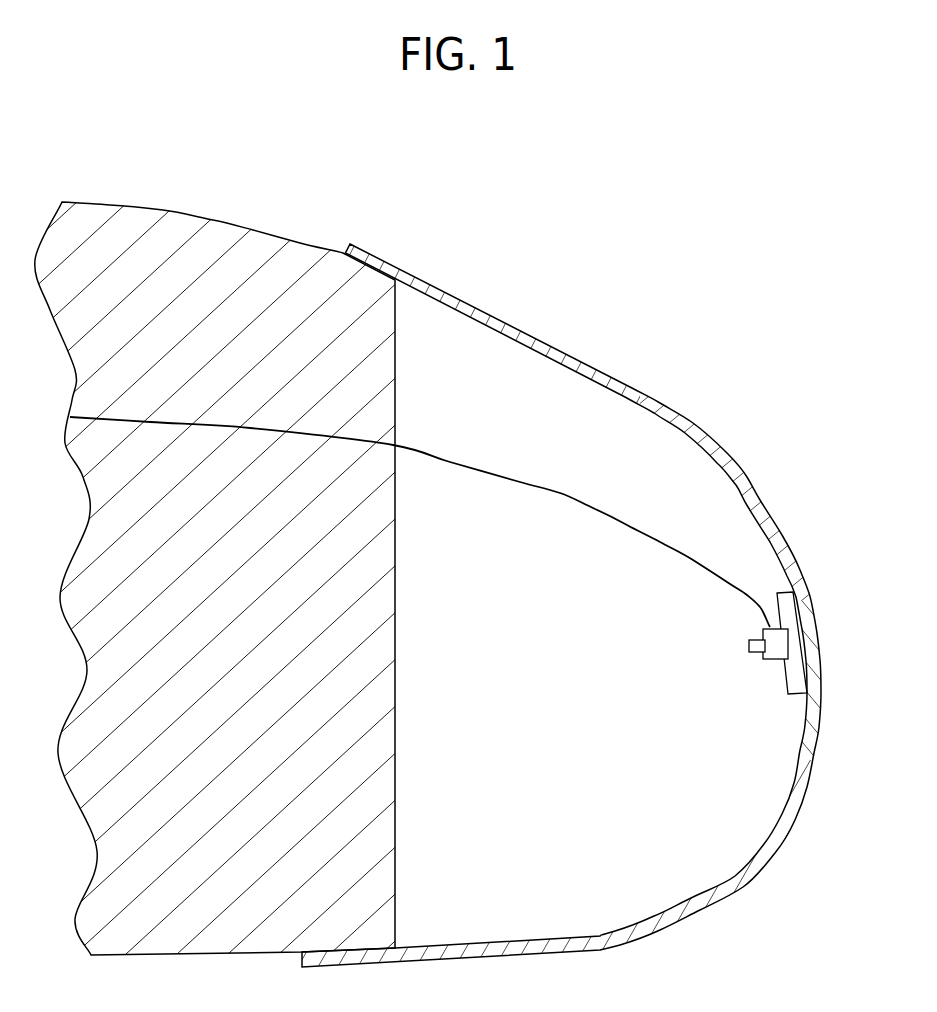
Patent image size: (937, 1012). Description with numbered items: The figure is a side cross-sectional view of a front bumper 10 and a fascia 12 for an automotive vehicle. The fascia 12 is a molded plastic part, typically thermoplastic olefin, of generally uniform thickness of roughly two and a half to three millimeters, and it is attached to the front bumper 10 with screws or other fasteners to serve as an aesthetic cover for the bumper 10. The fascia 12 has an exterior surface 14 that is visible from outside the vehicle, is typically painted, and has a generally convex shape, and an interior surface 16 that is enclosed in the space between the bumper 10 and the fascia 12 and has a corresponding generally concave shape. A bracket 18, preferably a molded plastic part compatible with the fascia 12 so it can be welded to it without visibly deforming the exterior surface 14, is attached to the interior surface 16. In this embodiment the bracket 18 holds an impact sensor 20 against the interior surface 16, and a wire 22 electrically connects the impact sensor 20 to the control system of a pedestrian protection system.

The front bumper 10 is at (226, 220).
The fascia 12 is at (457, 295).
The exterior surface 14 is at (772, 506).
The interior surface 16 is at (790, 765).
The bracket 18 is at (788, 683).
The impact sensor 20 is at (774, 663).
The wire 22 is at (520, 483).